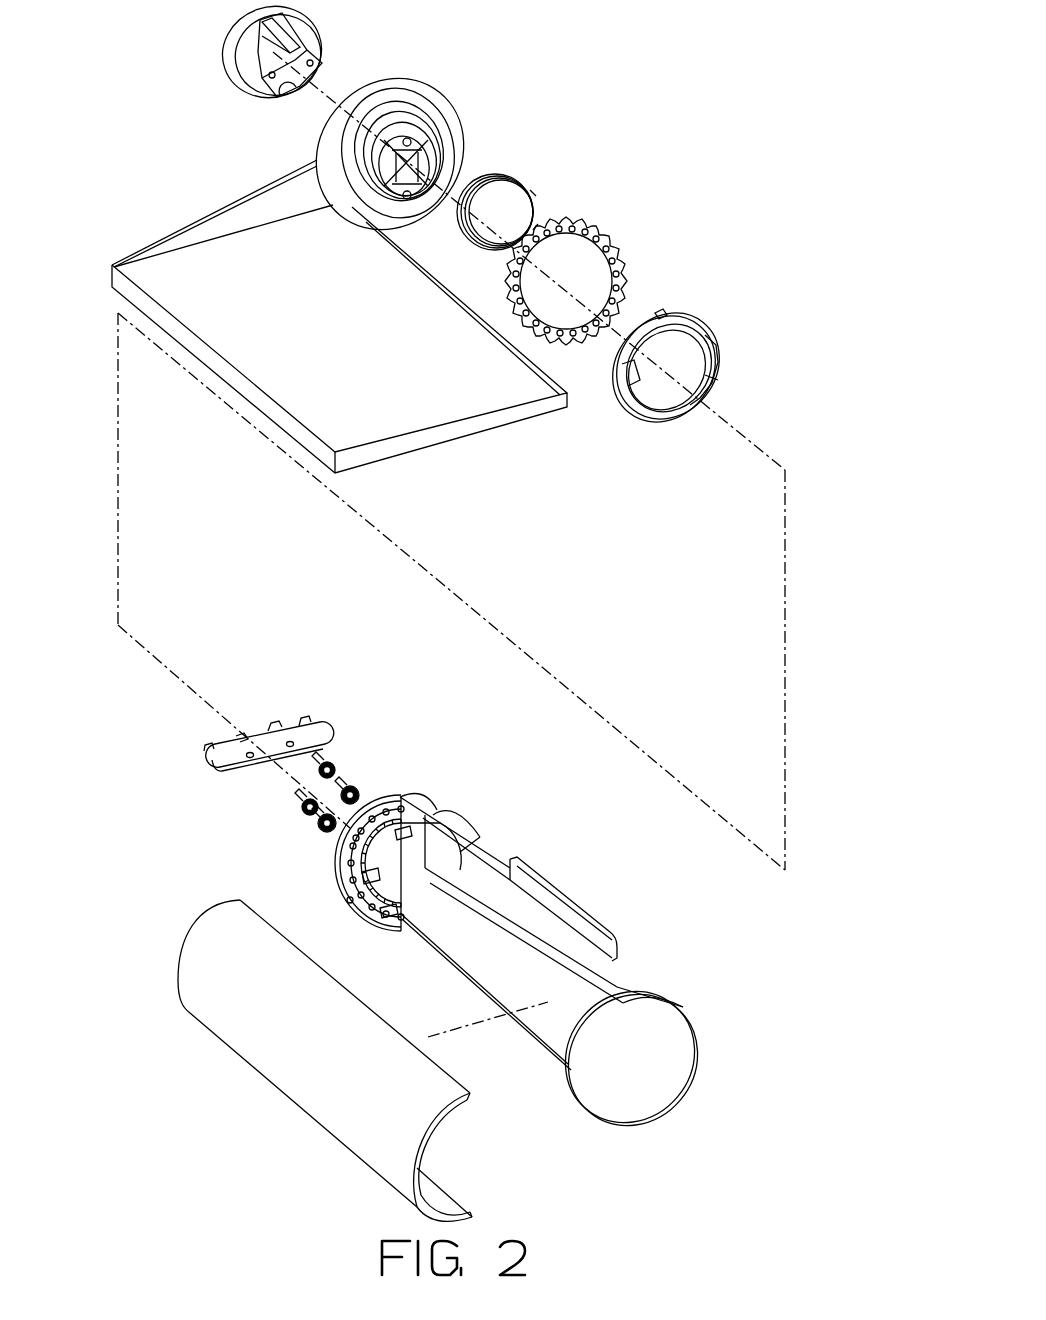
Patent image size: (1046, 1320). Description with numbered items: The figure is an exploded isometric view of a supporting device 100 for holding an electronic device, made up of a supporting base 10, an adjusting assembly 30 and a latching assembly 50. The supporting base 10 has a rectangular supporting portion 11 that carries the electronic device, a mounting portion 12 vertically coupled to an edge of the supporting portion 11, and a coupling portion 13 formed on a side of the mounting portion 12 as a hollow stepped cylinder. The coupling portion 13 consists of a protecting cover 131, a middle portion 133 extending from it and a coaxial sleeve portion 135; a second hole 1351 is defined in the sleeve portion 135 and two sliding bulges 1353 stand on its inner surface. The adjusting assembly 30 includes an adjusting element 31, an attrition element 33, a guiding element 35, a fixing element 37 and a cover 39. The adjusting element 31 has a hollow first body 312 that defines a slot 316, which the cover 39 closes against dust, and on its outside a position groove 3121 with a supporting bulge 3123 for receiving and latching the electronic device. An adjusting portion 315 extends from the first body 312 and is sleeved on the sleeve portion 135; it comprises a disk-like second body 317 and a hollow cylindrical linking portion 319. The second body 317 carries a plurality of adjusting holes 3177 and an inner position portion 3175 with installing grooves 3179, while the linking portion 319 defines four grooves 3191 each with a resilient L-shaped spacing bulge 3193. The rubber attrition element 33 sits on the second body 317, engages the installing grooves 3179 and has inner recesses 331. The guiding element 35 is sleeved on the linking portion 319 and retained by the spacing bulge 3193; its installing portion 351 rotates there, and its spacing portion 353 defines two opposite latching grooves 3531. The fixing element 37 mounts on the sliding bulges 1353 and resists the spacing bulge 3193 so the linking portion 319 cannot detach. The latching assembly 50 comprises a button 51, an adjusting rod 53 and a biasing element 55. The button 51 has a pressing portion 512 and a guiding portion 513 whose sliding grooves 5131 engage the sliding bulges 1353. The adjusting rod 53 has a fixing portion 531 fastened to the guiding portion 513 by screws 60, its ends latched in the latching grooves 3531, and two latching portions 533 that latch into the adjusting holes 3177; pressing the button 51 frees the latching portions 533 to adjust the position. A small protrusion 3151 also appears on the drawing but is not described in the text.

The supporting device 100 is at (730, 68).
The supporting base 10 is at (465, 119).
The supporting portion 11 is at (385, 285).
The mounting portion 12 is at (250, 207).
The coupling portion 13 is at (557, 55).
The protecting cover 131 is at (375, 92).
The middle portion 133 is at (383, 115).
The sleeve portion 135 is at (379, 119).
The second hole 1351 is at (387, 147).
The sliding bulges 1353 is at (390, 165).
The adjusting assembly 30 is at (603, 864).
The adjusting element 31 is at (517, 713).
The first body 312 is at (433, 812).
The position groove 3121 is at (490, 855).
The supporting bulge 3123 is at (608, 935).
The adjusting portion 315 is at (452, 718).
The protrusion 3151 is at (660, 310).
The slot 316 is at (540, 1048).
The second body 317 is at (334, 862).
The position portion 3175 is at (340, 840).
The adjusting holes 3177 is at (384, 925).
The installing grooves 3179 is at (432, 913).
The linking portion 319 is at (393, 800).
The grooves 3191 is at (347, 908).
The spacing bulge 3193 is at (347, 870).
The attrition element 33 is at (586, 263).
The recesses 331 is at (600, 265).
The guiding element 35 is at (810, 320).
The installing portion 351 is at (690, 316).
The spacing portion 353 is at (705, 337).
The latching grooves 3531 is at (718, 362).
The fixing element 37 is at (350, 782).
The cover 39 is at (258, 1035).
The latching assembly 50 is at (227, 27).
The button 51 is at (251, 63).
The pressing portion 512 is at (222, 58).
The guiding portion 513 is at (258, 67).
The sliding grooves 5131 is at (282, 33).
The adjusting rod 53 is at (112, 788).
The fixing portion 531 is at (218, 762).
The latching portions 533 is at (210, 748).
The biasing element 55 is at (497, 177).
The screws 60 is at (325, 757).